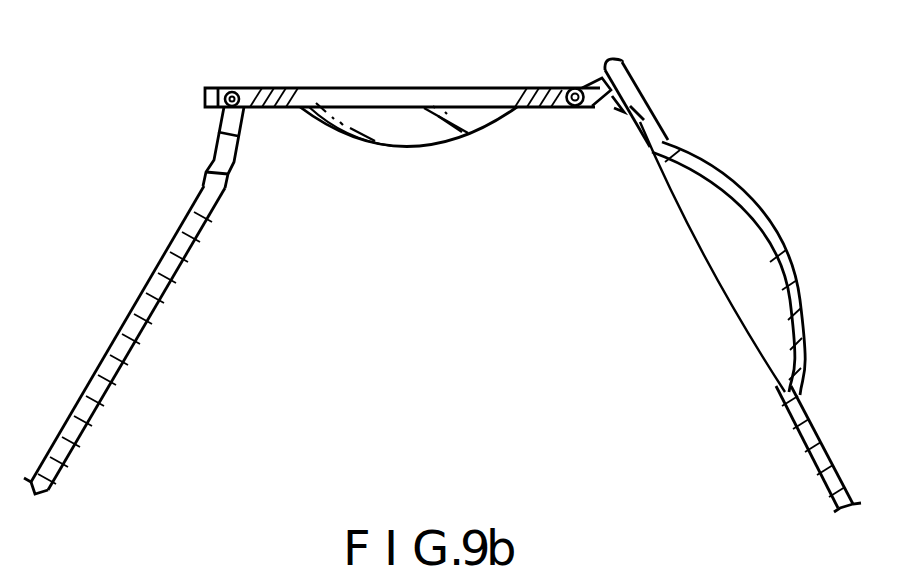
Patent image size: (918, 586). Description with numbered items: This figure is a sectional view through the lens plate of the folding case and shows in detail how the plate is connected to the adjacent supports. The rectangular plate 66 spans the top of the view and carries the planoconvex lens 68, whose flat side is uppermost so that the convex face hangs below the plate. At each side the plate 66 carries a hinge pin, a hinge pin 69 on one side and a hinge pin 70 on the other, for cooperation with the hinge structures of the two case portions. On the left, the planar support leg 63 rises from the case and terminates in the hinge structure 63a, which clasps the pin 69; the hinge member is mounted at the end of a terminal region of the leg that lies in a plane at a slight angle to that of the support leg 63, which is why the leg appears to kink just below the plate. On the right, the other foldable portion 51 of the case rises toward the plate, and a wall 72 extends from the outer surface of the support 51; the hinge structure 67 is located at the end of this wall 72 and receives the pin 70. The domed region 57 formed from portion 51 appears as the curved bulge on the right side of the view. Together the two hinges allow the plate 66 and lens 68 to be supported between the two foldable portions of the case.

The foldable portion 51 is at (826, 452).
The domed region 57 is at (780, 244).
The planar support leg 63 is at (140, 318).
The hinge structure 63a is at (217, 110).
The plate 66 is at (275, 88).
The hinge structure 67 is at (590, 118).
The planoconvex lens 68 is at (404, 100).
The hinge pin 69 is at (235, 92).
The hinge pin 70 is at (572, 112).
The wall 72 is at (577, 90).